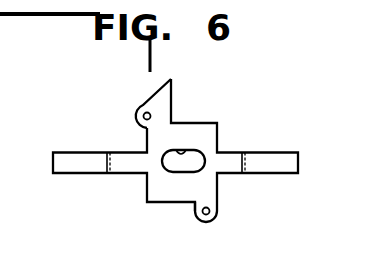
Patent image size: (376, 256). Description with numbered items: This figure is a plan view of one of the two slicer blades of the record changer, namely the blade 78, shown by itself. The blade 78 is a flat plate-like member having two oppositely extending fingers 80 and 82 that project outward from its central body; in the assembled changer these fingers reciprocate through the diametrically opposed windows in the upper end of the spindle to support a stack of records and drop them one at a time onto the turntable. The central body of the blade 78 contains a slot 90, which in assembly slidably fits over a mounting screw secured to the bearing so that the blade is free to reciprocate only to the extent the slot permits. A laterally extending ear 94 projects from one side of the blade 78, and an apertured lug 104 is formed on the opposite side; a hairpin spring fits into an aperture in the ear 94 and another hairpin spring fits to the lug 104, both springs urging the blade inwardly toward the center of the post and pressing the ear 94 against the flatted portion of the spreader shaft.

The blade 78 is at (190, 122).
The finger 80 is at (55, 158).
The finger 82 is at (298, 163).
The slot 90 is at (186, 153).
The ear 94 is at (157, 88).
The apertured lug 104 is at (197, 222).